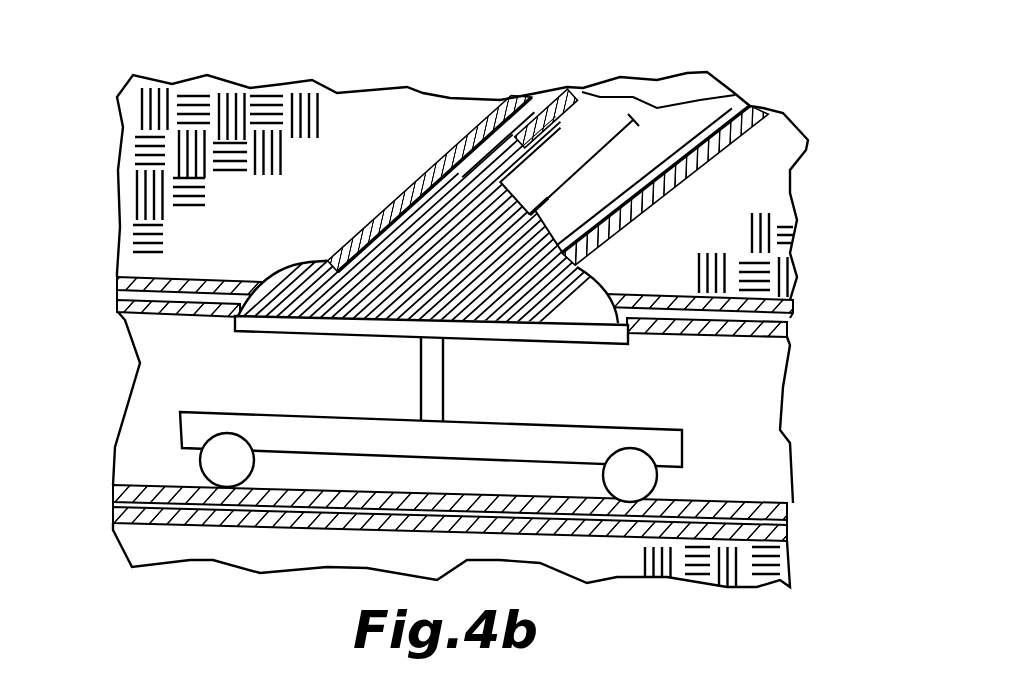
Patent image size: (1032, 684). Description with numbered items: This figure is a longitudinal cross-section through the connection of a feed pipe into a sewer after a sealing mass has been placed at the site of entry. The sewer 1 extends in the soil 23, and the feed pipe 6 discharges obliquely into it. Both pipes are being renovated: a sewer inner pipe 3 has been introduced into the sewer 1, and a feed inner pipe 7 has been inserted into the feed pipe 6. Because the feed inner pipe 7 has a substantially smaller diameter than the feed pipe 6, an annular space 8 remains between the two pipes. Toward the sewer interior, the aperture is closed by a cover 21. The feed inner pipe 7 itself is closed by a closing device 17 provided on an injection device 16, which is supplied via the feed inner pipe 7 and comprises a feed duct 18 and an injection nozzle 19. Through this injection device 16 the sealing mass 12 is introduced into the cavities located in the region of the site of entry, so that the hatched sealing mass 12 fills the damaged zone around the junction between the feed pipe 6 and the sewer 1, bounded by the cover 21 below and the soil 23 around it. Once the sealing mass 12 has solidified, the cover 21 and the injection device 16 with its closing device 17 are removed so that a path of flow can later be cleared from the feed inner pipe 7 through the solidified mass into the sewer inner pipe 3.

The sewer 1 is at (113, 285).
The sewer inner pipe 3 is at (116, 307).
The feed pipe 6 is at (404, 195).
The feed inner pipe 7 is at (578, 90).
The annular space 8 is at (498, 144).
The sealing mass 12 is at (479, 243).
The injection device 16 is at (574, 197).
The closing device 17 is at (532, 176).
The feed duct 18 is at (628, 137).
The injection nozzle 19 is at (559, 225).
The cover 21 is at (431, 419).
The soil 23 is at (460, 329).